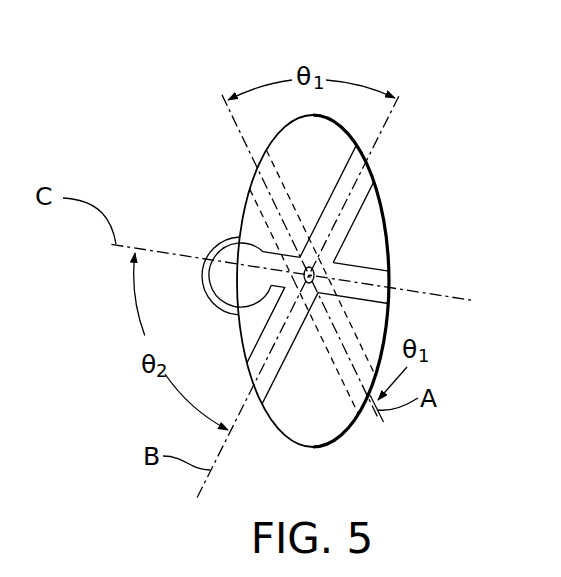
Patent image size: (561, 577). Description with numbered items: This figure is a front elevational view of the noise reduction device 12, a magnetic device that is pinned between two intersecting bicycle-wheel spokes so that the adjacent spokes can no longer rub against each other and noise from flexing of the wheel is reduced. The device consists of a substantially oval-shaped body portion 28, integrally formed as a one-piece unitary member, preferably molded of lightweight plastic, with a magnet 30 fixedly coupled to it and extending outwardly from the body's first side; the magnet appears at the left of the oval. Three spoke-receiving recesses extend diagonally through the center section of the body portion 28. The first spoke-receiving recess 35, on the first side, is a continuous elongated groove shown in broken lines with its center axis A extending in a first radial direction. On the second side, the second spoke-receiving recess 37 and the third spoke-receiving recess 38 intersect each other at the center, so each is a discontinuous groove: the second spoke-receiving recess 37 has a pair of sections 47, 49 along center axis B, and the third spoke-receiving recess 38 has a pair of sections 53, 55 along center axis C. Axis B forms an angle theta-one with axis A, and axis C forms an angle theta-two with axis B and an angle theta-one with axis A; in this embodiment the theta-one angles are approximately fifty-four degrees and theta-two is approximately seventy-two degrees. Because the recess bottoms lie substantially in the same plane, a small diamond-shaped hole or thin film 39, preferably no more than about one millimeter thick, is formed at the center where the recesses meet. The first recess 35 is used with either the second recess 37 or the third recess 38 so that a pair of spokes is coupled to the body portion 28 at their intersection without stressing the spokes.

The noise reduction device 12 is at (410, 92).
The body portion 28 is at (383, 203).
The magnet 30 is at (223, 263).
The first spoke-receiving recess 35 is at (247, 163).
The second spoke-receiving recess 37 is at (378, 173).
The third spoke-receiving recess 38 is at (392, 282).
The diamond-shaped hole or film 39 is at (311, 284).
The section of second spoke-receiving recess 47 is at (335, 192).
The section of second spoke-receiving recess 49 is at (285, 378).
The section of third spoke-receiving recess 53 is at (268, 243).
The section of third spoke-receiving recess 55 is at (360, 266).